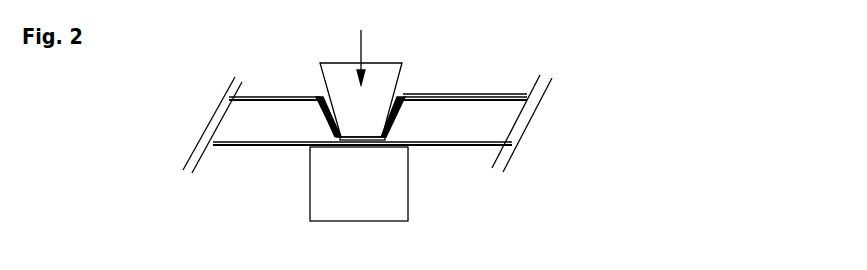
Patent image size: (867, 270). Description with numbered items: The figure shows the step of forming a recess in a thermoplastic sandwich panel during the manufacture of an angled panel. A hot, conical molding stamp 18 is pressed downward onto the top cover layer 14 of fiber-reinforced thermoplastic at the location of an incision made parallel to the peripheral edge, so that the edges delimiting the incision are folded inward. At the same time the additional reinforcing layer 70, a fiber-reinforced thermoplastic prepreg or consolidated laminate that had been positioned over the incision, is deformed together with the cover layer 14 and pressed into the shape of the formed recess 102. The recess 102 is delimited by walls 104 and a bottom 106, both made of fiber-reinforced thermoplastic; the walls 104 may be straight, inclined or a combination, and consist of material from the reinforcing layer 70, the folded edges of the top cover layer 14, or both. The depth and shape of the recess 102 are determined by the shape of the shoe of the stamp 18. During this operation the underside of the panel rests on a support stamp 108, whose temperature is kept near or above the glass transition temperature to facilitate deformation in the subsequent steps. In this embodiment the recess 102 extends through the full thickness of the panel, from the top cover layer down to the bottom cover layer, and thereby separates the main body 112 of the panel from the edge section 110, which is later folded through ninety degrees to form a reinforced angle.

The top cover layer 14 is at (323, 113).
The molding stamp 18 is at (382, 65).
The reinforcing layer 70 is at (322, 97).
The recess 102 is at (398, 116).
The walls 104 is at (323, 124).
The bottom 106 is at (375, 143).
The support stamp 108 is at (382, 198).
The edge section 110 is at (510, 83).
The main body 112 is at (231, 165).